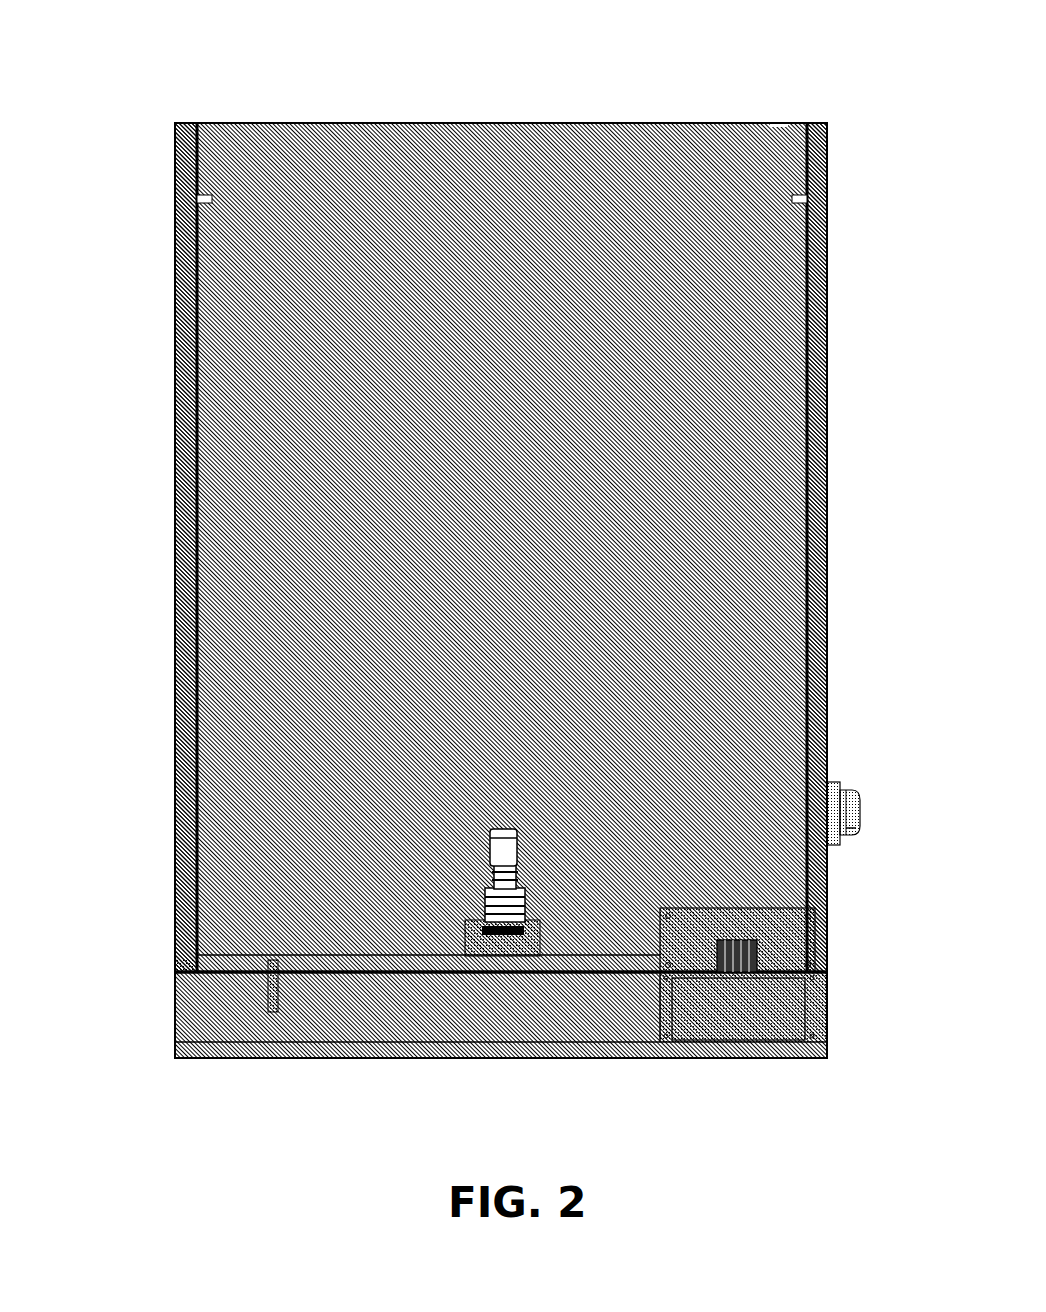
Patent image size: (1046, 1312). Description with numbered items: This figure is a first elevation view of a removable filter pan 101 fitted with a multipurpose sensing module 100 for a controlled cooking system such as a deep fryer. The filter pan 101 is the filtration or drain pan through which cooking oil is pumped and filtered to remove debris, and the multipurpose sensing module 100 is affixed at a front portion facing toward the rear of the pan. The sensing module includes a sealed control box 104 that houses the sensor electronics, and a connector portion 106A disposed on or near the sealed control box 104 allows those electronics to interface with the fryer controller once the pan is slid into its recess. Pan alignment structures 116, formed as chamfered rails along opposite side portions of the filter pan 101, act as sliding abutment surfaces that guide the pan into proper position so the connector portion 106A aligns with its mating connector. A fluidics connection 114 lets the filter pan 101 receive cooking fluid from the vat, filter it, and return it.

The multipurpose sensing module 100 is at (697, 1048).
The filter pan 101 is at (483, 104).
The sealed control box 104 is at (778, 1030).
The connector portion 106A is at (748, 952).
The fluidics connection 114 is at (500, 848).
The pan alignment structures 116 is at (175, 505).